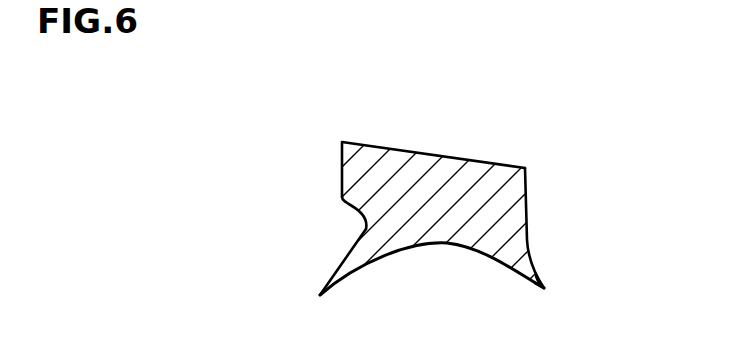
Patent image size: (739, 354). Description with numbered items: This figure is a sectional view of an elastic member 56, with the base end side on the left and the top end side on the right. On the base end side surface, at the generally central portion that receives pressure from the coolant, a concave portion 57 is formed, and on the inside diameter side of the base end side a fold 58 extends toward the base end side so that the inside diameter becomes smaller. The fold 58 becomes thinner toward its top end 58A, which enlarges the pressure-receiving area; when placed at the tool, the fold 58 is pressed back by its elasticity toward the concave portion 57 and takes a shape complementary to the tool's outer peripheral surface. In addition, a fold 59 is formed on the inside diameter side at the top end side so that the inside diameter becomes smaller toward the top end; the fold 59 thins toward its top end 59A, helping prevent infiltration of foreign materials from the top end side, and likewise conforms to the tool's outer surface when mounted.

The elastic member 56 is at (496, 179).
The concave portion 57 is at (362, 229).
The fold 58 is at (378, 244).
The top end 58A is at (353, 271).
The fold 59 is at (520, 254).
The top end 59A is at (543, 287).